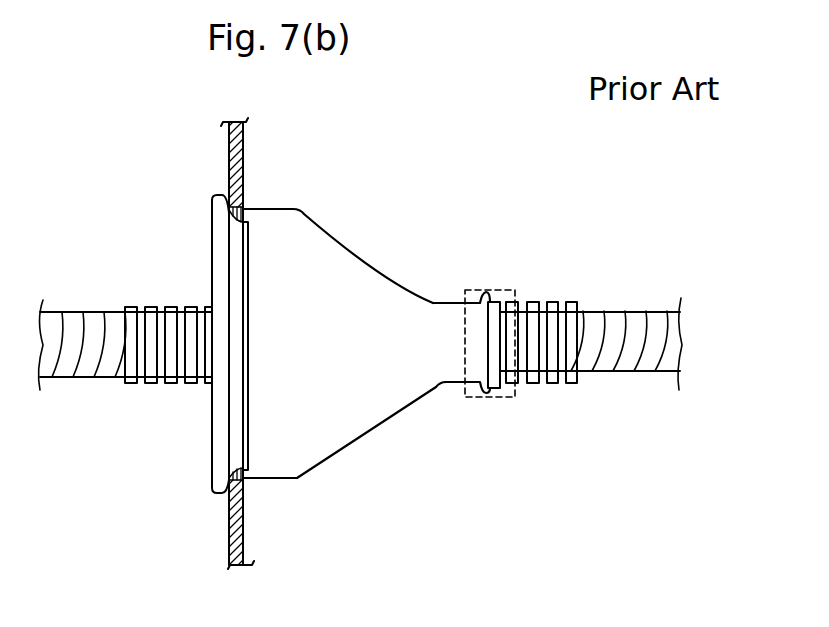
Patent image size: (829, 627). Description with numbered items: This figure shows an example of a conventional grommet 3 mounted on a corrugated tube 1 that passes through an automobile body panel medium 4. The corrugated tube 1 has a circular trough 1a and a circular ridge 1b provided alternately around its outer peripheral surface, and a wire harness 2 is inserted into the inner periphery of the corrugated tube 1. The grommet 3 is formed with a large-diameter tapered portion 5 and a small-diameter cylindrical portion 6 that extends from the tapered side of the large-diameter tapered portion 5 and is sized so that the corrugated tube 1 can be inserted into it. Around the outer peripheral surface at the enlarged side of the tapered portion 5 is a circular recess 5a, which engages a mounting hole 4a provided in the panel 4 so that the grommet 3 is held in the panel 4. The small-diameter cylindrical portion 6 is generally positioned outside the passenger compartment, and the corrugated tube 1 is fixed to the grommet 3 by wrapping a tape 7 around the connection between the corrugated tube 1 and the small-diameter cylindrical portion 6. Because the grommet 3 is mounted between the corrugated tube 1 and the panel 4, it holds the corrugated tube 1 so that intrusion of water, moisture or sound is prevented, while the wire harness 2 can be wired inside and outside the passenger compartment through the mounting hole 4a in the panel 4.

The corrugated tube 1 is at (155, 391).
The circular trough 1a is at (544, 302).
The circular ridge 1b is at (540, 383).
The wire harness 2 is at (635, 310).
The grommet 3 is at (355, 258).
The automobile body panel medium 4 is at (243, 160).
The mounting hole 4a is at (240, 468).
The large-diameter tapered portion 5 is at (325, 445).
The circular recess 5a is at (243, 209).
The small-diameter cylindrical portion 6 is at (448, 303).
The tape 7 is at (493, 290).